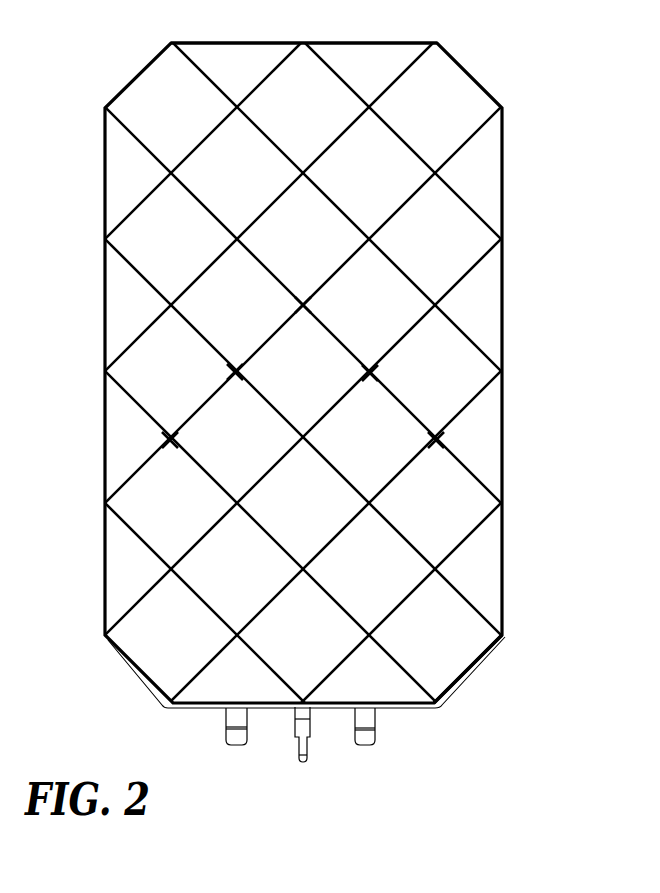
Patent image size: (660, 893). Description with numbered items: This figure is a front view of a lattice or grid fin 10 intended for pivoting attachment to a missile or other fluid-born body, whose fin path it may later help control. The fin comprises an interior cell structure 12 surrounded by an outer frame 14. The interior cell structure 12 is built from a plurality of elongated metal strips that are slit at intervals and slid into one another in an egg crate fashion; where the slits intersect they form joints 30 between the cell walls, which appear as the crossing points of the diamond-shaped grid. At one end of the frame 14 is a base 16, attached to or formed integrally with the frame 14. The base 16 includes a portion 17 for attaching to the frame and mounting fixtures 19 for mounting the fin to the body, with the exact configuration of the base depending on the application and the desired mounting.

The lattice fin 10 is at (582, 117).
The interior cell structure 12 is at (403, 208).
The outer frame 14 is at (465, 67).
The base 16 is at (438, 708).
The portion for attaching to the frame 17 is at (462, 677).
The mounting fixtures 19 is at (302, 762).
The joints 30 is at (303, 305).